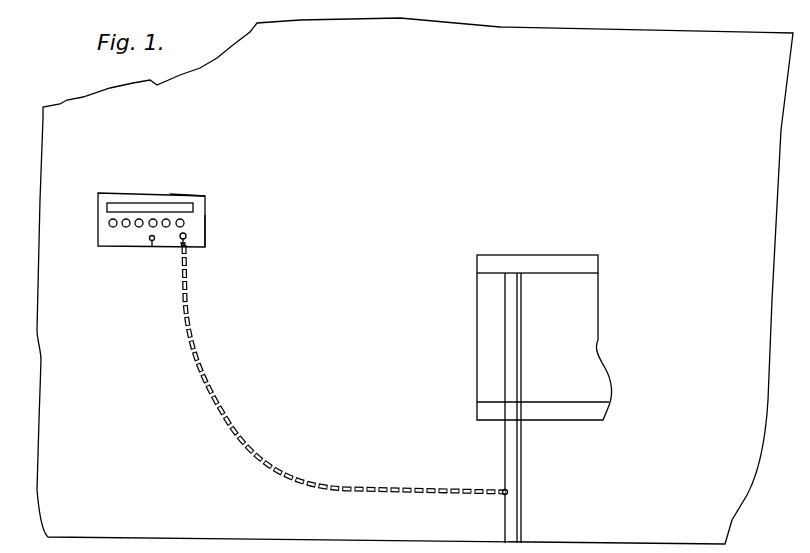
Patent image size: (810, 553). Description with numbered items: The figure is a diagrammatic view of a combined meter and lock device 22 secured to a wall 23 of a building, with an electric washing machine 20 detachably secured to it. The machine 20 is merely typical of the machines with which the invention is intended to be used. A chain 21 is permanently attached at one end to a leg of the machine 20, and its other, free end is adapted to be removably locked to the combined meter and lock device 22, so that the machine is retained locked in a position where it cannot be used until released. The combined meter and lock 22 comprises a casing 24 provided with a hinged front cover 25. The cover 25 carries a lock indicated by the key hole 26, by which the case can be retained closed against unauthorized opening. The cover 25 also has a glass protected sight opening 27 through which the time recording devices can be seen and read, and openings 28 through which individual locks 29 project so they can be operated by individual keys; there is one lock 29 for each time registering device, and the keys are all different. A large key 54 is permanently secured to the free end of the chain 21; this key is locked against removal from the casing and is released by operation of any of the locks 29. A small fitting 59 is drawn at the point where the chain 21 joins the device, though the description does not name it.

The electric washing machine 20 is at (483, 330).
The chain 21 is at (287, 473).
The combined meter and lock device 22 is at (97, 188).
The wall 23 is at (66, 102).
The casing 24 is at (208, 232).
The hinged front cover 25 is at (198, 200).
The key hole 26 is at (151, 243).
The glass protected sight opening 27 is at (139, 206).
The openings 28 is at (111, 227).
The individual locks 29 is at (125, 228).
The large key 54 is at (182, 240).
The hook 59 is at (187, 240).